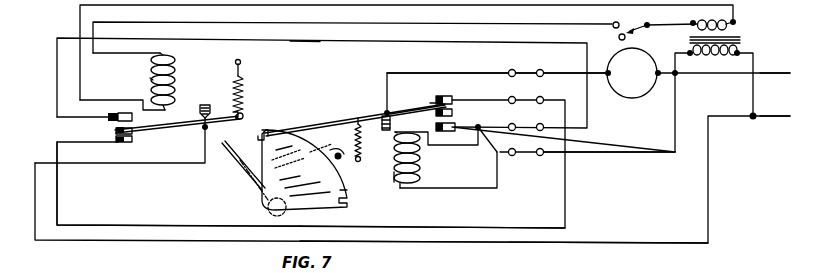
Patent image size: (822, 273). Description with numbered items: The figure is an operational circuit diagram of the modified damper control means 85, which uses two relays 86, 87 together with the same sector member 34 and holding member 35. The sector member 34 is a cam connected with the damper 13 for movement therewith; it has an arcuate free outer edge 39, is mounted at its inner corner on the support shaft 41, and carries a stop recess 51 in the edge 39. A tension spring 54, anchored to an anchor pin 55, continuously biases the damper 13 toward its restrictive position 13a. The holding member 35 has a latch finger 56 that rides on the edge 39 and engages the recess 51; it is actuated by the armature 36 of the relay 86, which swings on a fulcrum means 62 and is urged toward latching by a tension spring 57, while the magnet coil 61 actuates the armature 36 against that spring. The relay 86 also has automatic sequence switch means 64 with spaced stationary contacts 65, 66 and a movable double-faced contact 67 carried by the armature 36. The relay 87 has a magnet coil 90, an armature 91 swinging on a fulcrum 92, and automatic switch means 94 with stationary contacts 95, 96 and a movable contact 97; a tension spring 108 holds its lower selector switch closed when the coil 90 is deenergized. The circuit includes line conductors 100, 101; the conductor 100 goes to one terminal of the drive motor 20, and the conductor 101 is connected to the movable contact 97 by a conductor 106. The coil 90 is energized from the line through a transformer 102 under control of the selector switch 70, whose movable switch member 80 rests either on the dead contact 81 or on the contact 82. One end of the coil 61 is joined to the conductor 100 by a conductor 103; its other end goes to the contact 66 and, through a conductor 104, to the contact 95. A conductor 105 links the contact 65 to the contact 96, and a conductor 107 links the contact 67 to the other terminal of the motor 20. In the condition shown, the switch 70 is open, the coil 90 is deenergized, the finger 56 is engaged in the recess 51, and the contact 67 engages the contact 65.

The damper 13 is at (232, 168).
The restrictive position 13a is at (243, 193).
The drive motor 20 is at (634, 93).
The sector member 34 is at (300, 148).
The holding member 35 is at (322, 123).
The armature 36 is at (400, 118).
The arcuate free outer edge 39 is at (347, 192).
The support shaft 41 is at (266, 208).
The stop recess 51 is at (257, 140).
The tension spring 54 is at (302, 172).
The anchor pin 55 is at (340, 153).
The latch finger 56 is at (263, 129).
The tension spring 57 is at (362, 146).
The magnet coil 61 is at (390, 180).
The fulcrum means 62 is at (381, 118).
The automatic sequence switch means 64 is at (431, 103).
The stationary switch contact 65 is at (448, 95).
The stationary switch contact 66 is at (445, 132).
The movable double-faced contact 67 is at (452, 112).
The selector switch 70 is at (648, 23).
The movable switch member 80 is at (640, 30).
The dead contact 81 is at (613, 24).
The contact 82 is at (619, 39).
The damper control means 85 is at (134, 193).
The relay 86 is at (420, 158).
The relay 87 is at (150, 80).
The magnet coil 90 is at (176, 72).
The armature 91 is at (184, 128).
The fulcrum 92 is at (203, 105).
The automatic switch means 94 is at (108, 128).
The stationary contact 95 is at (117, 112).
The stationary contact 96 is at (118, 142).
The movable contact 97 is at (132, 136).
The line conductor 100 is at (766, 70).
The line conductor 101 is at (771, 114).
The transformer 102 is at (740, 29).
The conductor 103 is at (584, 156).
The conductor 104 is at (305, 43).
The conductor 105 is at (420, 228).
The conductor 106 is at (417, 244).
The conductor 107 is at (438, 72).
The tension spring 108 is at (244, 92).